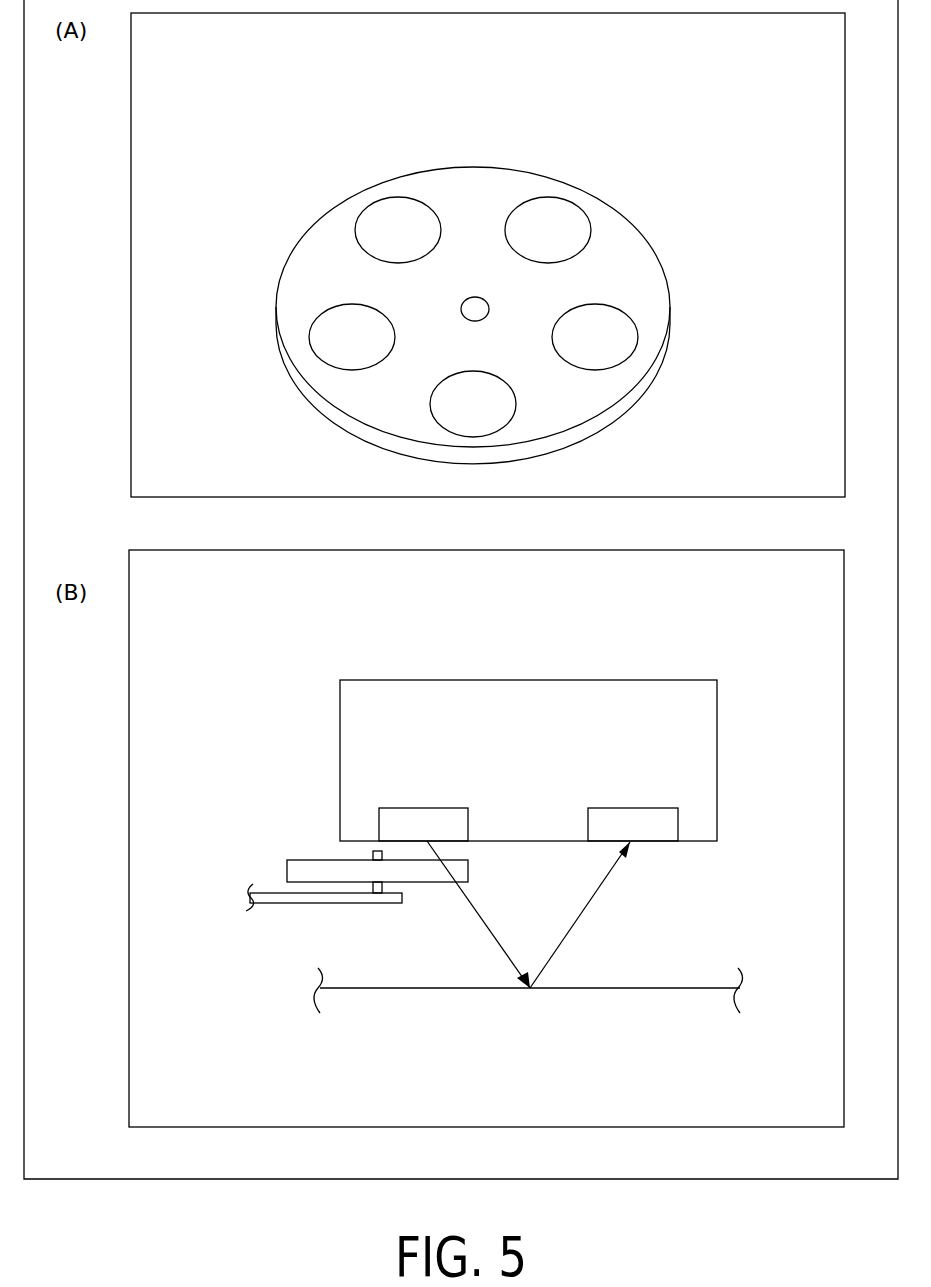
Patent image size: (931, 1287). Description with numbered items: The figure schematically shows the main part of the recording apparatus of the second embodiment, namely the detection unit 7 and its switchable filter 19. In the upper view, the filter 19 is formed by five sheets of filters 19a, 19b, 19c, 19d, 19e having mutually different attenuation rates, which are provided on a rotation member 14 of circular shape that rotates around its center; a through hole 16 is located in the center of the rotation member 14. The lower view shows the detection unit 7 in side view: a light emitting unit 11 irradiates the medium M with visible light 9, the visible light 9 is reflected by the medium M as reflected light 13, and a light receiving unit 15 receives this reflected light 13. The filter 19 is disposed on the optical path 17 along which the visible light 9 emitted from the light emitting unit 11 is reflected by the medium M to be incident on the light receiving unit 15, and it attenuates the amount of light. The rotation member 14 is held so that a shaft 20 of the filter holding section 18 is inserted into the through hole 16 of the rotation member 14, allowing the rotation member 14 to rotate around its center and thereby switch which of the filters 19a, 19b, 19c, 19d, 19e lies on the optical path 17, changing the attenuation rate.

The detection unit 7 is at (717, 750).
The visible light 9 is at (488, 928).
The light emitting unit 11 is at (437, 808).
The reflected light 13 is at (568, 932).
The rotation member 14 is at (625, 263).
The light receiving unit 15 is at (618, 808).
The through hole 16 is at (473, 297).
The optical path 17 is at (564, 968).
The filter holding section 18 is at (295, 903).
The filter 19 is at (515, 155).
The filter 19a is at (608, 333).
The filter 19b is at (545, 227).
The filter 19c is at (398, 228).
The filter 19d is at (333, 332).
The filter 19e is at (494, 402).
The shaft 20 is at (370, 853).
The medium M is at (612, 990).